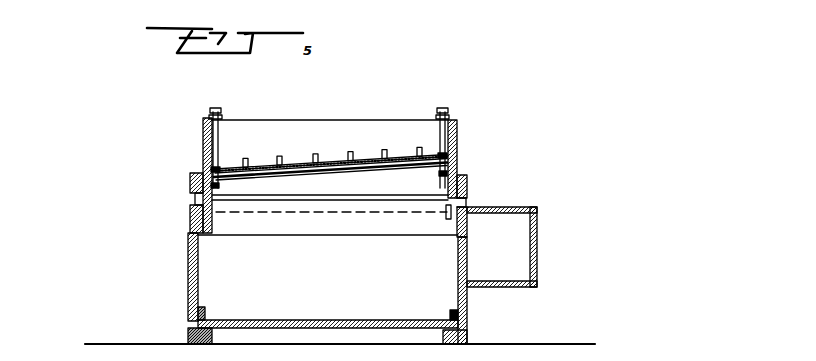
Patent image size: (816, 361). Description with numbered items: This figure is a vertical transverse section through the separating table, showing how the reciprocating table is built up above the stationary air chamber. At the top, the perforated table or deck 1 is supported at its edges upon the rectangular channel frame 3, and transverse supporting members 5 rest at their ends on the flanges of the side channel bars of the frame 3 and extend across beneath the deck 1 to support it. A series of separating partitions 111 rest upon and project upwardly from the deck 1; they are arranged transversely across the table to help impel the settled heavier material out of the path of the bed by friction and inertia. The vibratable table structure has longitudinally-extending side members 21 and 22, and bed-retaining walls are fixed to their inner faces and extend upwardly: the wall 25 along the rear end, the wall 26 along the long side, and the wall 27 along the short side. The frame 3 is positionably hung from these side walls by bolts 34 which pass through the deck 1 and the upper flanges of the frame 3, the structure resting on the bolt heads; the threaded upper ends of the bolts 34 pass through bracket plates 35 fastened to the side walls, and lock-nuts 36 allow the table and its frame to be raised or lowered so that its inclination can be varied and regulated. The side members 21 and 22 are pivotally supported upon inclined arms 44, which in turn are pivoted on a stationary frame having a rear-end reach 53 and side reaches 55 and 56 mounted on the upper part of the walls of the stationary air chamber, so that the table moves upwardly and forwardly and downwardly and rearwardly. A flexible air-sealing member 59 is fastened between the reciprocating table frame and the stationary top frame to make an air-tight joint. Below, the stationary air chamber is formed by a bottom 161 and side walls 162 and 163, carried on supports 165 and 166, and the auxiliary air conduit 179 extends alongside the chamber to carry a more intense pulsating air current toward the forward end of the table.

The table or deck 1 is at (365, 153).
The rectangular frame 3 is at (214, 185).
The transverse supporting members 5 is at (337, 175).
The longitudinally-extending side member 21 is at (467, 186).
The longitudinally-extending side member 22 is at (190, 183).
The bed-retaining wall 25 is at (322, 112).
The bed-retaining wall 26 is at (457, 150).
The bed-retaining wall 27 is at (202, 153).
The bolts 34 is at (202, 142).
The bracket plates 35 is at (224, 120).
The lock-nuts 36 is at (208, 114).
The arms 44 is at (220, 203).
The rear-end reach 53 is at (325, 228).
The side reach 55 is at (468, 230).
The side reach 56 is at (190, 218).
The flexible air-sealing member 59 is at (190, 196).
The separating partitions 111 is at (307, 158).
The bottom 161 is at (342, 320).
The side wall 162 is at (467, 298).
The side wall 163 is at (188, 278).
The support 165 is at (467, 335).
The support 166 is at (188, 333).
The auxiliary air conduit 179 is at (515, 270).